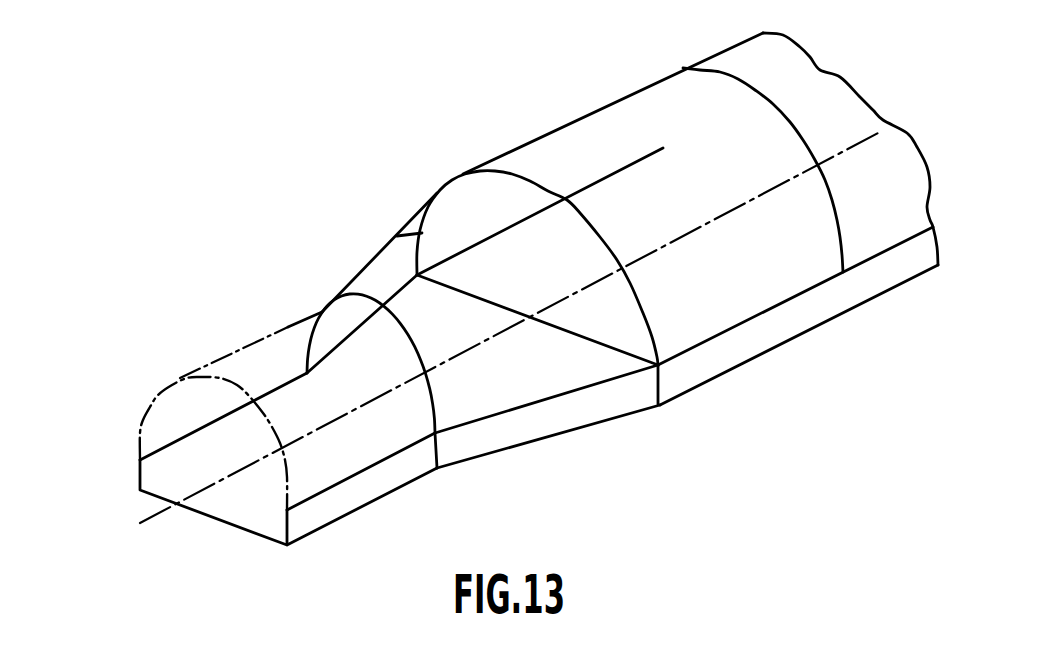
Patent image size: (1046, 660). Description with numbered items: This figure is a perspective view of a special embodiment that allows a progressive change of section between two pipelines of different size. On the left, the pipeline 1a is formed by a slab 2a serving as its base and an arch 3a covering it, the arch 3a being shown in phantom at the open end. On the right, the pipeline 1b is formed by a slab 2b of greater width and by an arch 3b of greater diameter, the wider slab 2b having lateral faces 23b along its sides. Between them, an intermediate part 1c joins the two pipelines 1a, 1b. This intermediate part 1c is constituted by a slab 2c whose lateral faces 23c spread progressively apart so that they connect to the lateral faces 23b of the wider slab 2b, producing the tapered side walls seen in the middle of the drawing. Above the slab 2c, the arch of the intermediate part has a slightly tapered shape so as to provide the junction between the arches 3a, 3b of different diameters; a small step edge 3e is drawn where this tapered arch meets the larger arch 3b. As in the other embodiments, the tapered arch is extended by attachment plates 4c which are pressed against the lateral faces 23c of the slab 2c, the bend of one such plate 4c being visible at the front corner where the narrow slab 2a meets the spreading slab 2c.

The pipeline 1a is at (135, 436).
The pipeline 1b is at (497, 146).
The intermediate part 1c is at (358, 258).
The slab 2a is at (150, 477).
The slab 2b is at (845, 292).
The slab 2c is at (473, 460).
The arch 3a is at (166, 388).
The arch 3b is at (628, 88).
The step edge of transition wall 3e is at (397, 235).
The attachment plates 4c is at (436, 450).
The lateral faces 23b is at (773, 322).
The lateral faces 23c is at (555, 418).